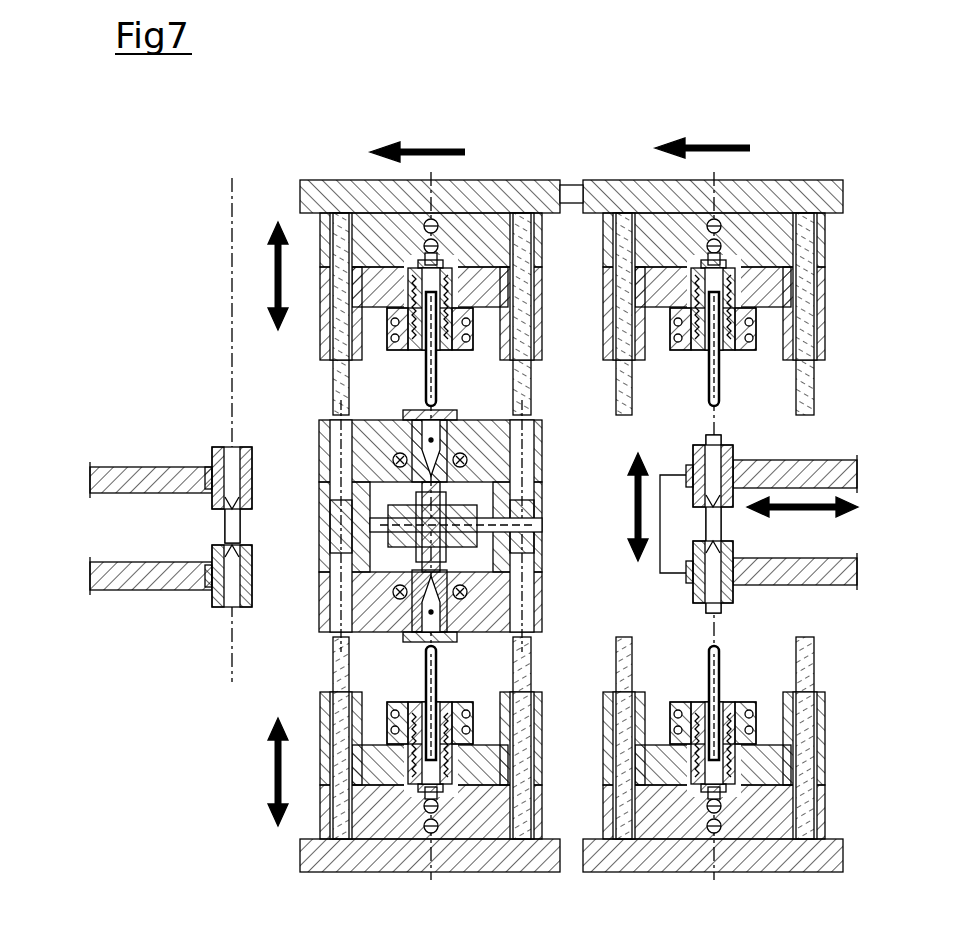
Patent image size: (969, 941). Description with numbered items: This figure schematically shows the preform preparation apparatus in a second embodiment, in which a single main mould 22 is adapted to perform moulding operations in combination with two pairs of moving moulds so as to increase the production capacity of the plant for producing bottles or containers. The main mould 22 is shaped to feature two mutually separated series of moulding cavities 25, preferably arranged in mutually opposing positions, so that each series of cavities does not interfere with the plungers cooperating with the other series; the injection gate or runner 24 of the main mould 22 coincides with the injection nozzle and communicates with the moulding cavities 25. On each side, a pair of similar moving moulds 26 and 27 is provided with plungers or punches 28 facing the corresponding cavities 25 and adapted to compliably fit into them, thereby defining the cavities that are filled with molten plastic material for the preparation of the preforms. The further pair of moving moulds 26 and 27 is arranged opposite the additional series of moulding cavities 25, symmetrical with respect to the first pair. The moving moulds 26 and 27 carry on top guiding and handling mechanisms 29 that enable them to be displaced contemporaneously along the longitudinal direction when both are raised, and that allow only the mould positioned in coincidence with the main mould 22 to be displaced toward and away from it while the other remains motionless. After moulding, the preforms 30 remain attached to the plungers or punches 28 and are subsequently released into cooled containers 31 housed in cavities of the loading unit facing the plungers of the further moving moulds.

The main mould 22 is at (520, 600).
The injection gate or runner 24 is at (522, 523).
The moulding cavities 25 is at (431, 436).
The first moving mould 26 is at (430, 526).
The second moving mould 27 is at (713, 526).
The plungers or punches 28 is at (436, 367).
The guiding and handling mechanisms 29 is at (570, 190).
The preforms 30 is at (425, 388).
The cooled containers 31 is at (733, 455).